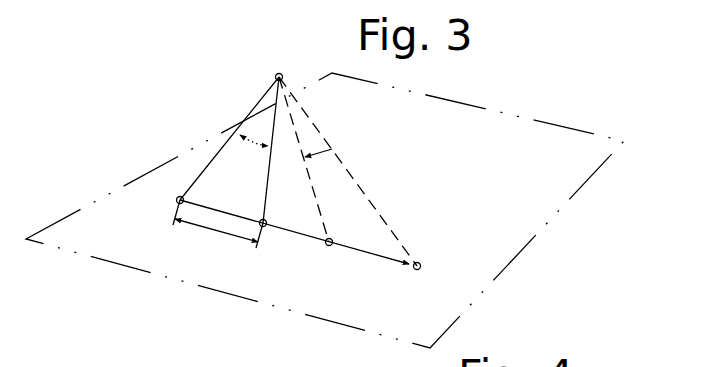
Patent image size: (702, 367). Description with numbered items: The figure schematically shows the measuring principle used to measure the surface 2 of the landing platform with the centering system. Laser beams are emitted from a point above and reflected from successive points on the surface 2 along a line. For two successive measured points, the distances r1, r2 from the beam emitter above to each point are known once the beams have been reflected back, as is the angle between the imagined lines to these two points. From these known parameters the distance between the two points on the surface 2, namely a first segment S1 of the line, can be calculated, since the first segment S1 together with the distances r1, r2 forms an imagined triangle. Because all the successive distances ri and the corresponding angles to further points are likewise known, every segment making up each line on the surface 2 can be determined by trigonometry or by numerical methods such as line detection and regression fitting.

The surface 2 is at (485, 108).
The distance to first measured point r1 is at (205, 167).
The distance to second measured point r2 is at (266, 188).
The successive distance ri is at (374, 204).
The first segment of the line S1 is at (220, 232).